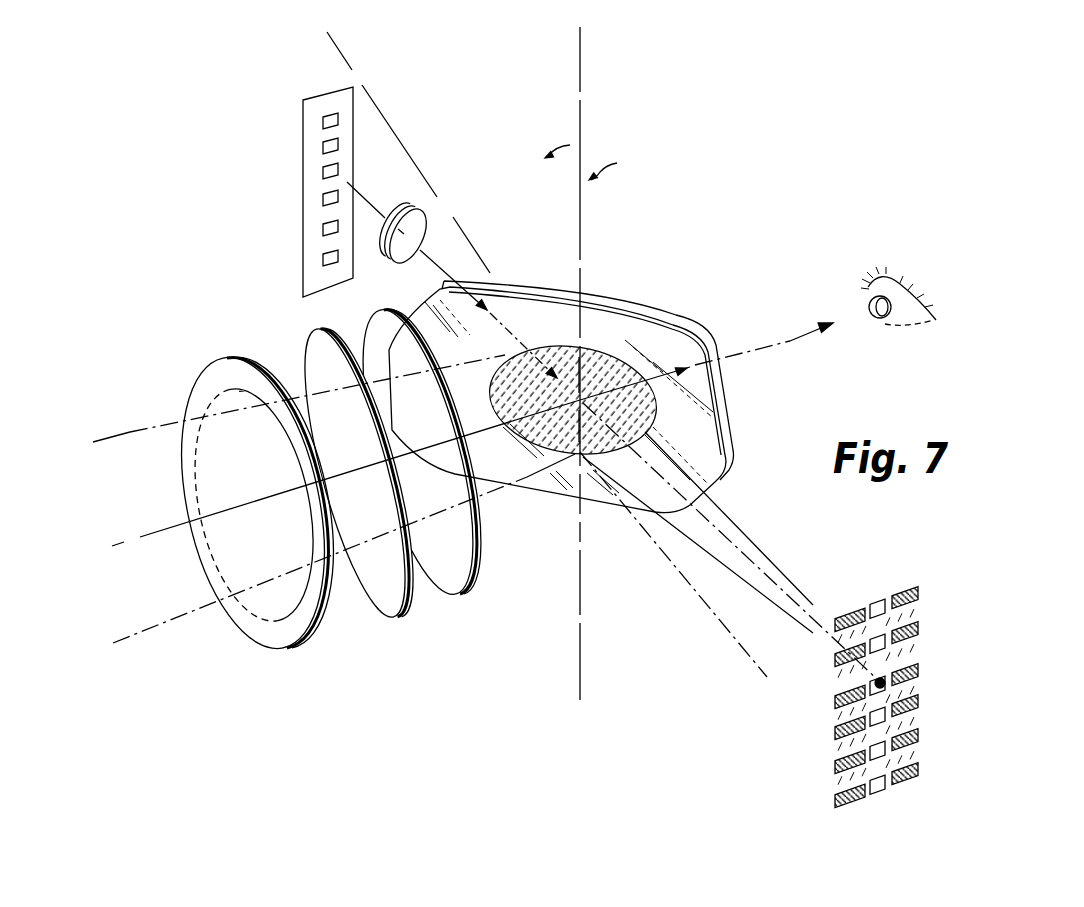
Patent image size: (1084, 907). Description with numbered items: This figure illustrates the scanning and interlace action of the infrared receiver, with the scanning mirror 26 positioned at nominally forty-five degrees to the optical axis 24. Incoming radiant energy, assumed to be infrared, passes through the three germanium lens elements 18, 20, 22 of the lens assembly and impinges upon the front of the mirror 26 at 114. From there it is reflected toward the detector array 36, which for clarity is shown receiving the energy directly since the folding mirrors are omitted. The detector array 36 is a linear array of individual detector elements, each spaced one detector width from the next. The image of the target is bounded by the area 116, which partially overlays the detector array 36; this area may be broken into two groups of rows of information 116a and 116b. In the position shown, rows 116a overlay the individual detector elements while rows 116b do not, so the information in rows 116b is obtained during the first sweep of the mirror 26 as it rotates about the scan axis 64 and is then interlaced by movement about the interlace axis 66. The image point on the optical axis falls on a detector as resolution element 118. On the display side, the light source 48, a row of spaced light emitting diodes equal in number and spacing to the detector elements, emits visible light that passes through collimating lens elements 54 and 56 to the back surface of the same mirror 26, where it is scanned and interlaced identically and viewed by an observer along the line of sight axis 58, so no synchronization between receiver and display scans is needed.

The lens element 18 is at (307, 640).
The lens element 20 is at (400, 613).
The lens element 22 is at (457, 597).
The optical axis 24 is at (163, 533).
The scan mirror 26 is at (588, 383).
The detector array 36 is at (848, 711).
The light source 48 is at (322, 124).
The collimating lens element 54 is at (398, 203).
The collimating lens element 56 is at (423, 232).
The line of sight axis 58 is at (785, 340).
The scan axis 64 is at (580, 133).
The interlace axis 66 is at (360, 74).
The impingement point 114 is at (658, 420).
The image area 116 is at (917, 777).
The rows of information 116a is at (835, 743).
The rows of information 116b is at (835, 763).
The resolution element 118 is at (886, 686).